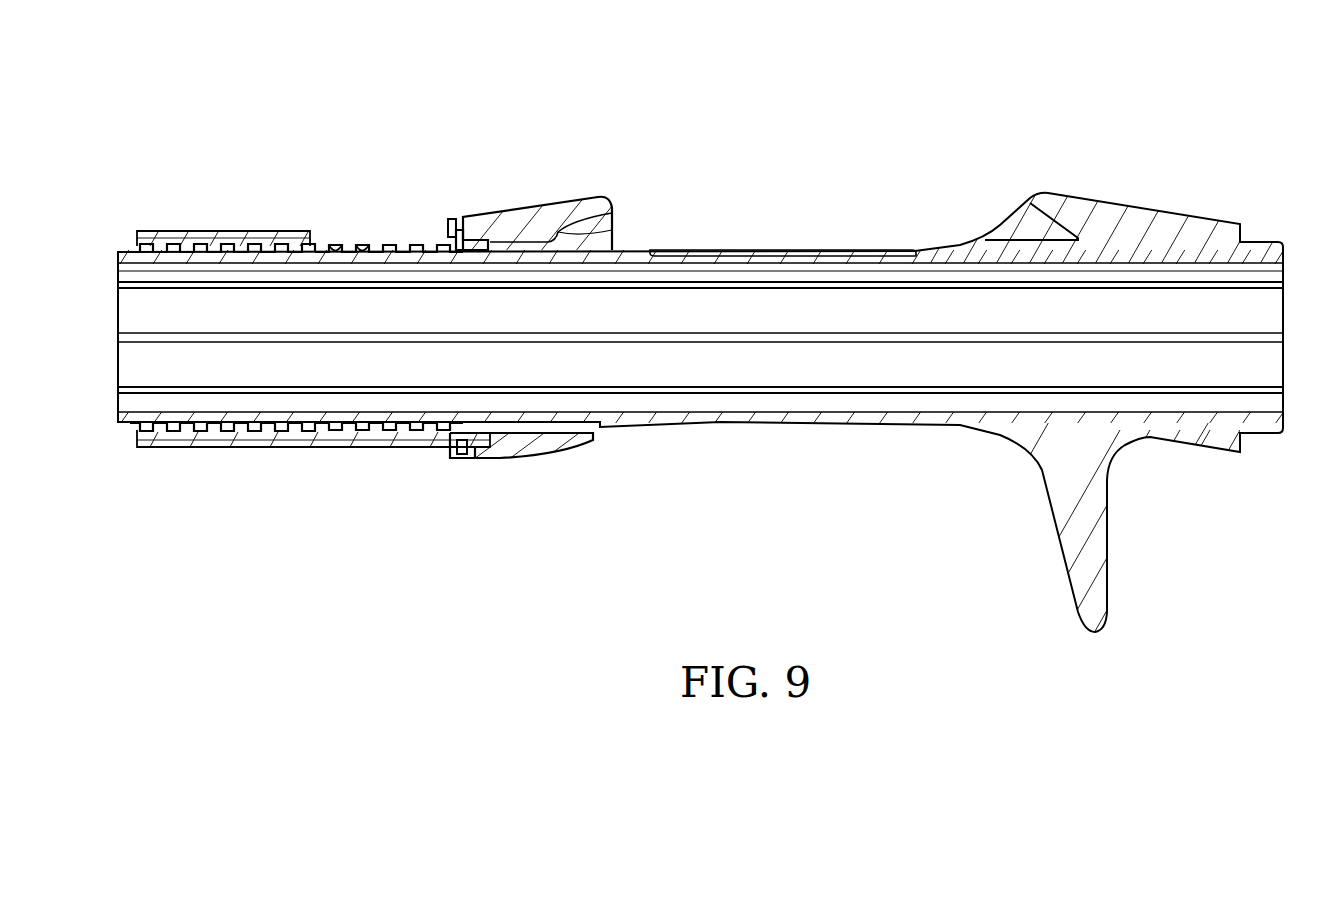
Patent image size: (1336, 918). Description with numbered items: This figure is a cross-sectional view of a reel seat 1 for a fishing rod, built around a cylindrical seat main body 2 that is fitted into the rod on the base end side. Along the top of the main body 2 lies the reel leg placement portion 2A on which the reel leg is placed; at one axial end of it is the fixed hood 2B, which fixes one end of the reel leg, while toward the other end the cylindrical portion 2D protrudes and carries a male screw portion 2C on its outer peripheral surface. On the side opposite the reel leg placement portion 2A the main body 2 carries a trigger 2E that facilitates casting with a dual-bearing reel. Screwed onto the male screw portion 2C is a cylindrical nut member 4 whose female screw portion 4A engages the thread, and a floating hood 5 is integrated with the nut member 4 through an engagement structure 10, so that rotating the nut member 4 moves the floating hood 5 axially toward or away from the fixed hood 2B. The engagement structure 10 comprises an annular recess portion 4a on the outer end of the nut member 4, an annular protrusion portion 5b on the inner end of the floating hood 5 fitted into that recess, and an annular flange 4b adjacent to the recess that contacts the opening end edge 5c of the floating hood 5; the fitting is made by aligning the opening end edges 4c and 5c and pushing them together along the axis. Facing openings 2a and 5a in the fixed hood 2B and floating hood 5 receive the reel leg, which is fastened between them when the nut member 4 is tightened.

The reel seat 1 is at (982, 130).
The seat main body 2 is at (841, 250).
The reel leg placement portion 2A is at (738, 250).
The fixed hood 2B is at (1140, 243).
The opening 2a is at (1030, 215).
The male screw portion 2C is at (262, 248).
The cylindrical portion 2D is at (189, 428).
The trigger 2E is at (1088, 535).
The nut member 4 is at (408, 243).
The female screw portion 4A is at (337, 247).
The annular recess portion 4a is at (462, 232).
The annular flange 4b is at (451, 220).
The opening end edge 4c is at (490, 440).
The floating hood 5 is at (520, 217).
The opening 5a is at (612, 225).
The annular protrusion portion 5b is at (462, 455).
The opening end edge 5c is at (448, 458).
The engagement structure 10 is at (486, 323).